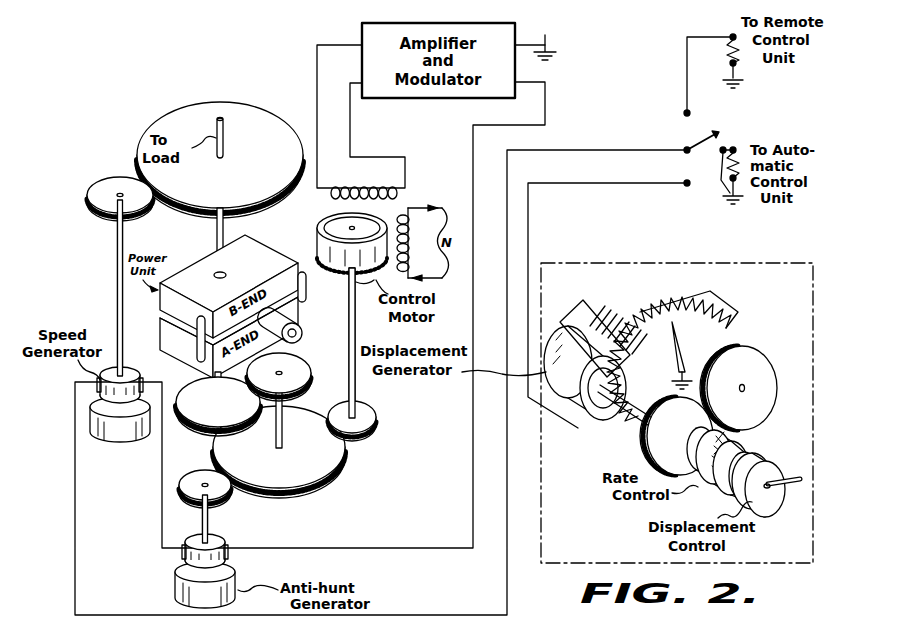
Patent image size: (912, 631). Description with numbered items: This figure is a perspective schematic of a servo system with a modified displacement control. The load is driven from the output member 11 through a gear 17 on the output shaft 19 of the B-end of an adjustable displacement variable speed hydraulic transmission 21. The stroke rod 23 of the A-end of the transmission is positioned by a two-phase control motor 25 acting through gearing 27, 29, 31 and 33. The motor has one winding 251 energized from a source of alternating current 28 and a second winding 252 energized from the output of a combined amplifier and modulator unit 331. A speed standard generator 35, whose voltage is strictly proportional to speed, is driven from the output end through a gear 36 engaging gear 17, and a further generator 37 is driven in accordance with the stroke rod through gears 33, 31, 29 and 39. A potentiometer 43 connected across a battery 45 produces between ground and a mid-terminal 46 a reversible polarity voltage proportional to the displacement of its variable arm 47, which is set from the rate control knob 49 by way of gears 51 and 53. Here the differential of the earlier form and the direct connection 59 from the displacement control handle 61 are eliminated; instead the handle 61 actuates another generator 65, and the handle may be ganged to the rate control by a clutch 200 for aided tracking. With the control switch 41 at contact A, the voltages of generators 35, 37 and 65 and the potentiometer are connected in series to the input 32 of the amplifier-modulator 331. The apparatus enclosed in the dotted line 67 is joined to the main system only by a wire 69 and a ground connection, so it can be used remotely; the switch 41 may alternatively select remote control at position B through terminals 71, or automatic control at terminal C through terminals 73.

The output member 11 is at (224, 123).
The gear 17 is at (266, 110).
The output shaft 19 is at (216, 246).
The variable speed hydraulic transmission 21 is at (300, 284).
The stroke rod 23 is at (206, 397).
The motor 25 is at (324, 226).
The gearing 27 is at (373, 424).
The source of alternating current 28 is at (453, 241).
The gearing 29 is at (320, 490).
The gearing 31 is at (300, 355).
The input 32 is at (550, 47).
The gearing 33 is at (188, 430).
The generator 35 is at (118, 444).
The gear 36 is at (107, 186).
The generator 37 is at (238, 586).
The gear 39 is at (222, 505).
The control switch 41 is at (687, 140).
The potentiometer 43 is at (712, 298).
The battery 45 is at (624, 304).
The mid-terminal 46 is at (596, 310).
The variable arm 47 is at (688, 340).
The control knob 49 is at (749, 448).
The gear 51 is at (646, 451).
The gear 53 is at (768, 360).
The shaft 59 is at (627, 422).
The displacement control handle 61 is at (768, 512).
The generator 65 is at (546, 354).
The dotted line 67 is at (541, 492).
The wire 69 is at (530, 202).
The terminals 71 is at (721, 64).
The terminals 73 is at (720, 182).
The clutch 200 is at (749, 464).
The winding 251 is at (419, 230).
The winding 252 is at (370, 184).
The amplifier and modulator unit 331 is at (362, 33).